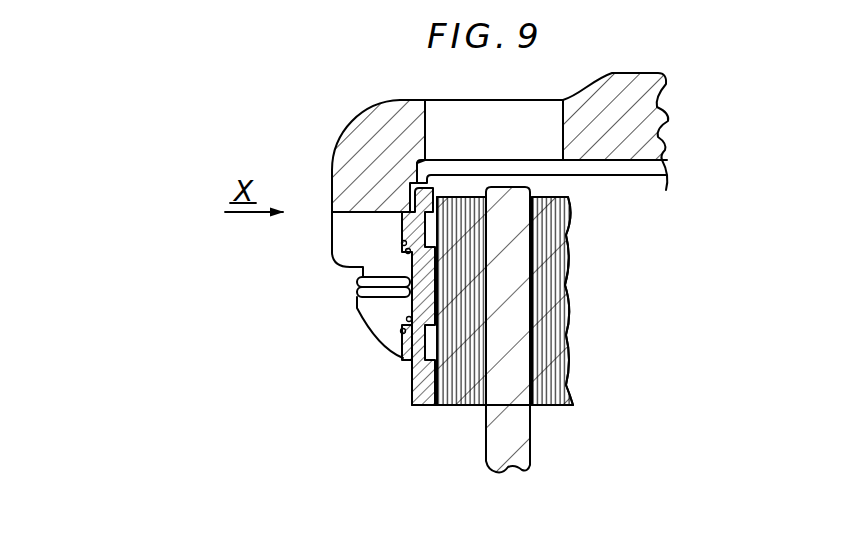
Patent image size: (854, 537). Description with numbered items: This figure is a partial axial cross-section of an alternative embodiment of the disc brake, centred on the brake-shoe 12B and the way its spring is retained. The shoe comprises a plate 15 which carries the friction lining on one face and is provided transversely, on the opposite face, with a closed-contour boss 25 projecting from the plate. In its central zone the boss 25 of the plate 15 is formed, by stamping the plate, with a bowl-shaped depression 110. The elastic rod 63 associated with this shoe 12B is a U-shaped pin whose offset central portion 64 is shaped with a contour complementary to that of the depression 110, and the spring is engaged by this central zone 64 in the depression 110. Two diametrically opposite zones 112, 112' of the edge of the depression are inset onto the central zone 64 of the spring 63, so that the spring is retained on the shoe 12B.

The plate 15 is at (411, 386).
The boss 25 is at (402, 362).
The inset zone of the depression edge 112 is at (373, 230).
The bowl-shaped depression 110 is at (406, 253).
The central portion 64 is at (406, 318).
The inset zone of the depression edge 112' is at (366, 345).
The elastic rod 63 is at (352, 285).
The brake-shoe 12B is at (420, 409).